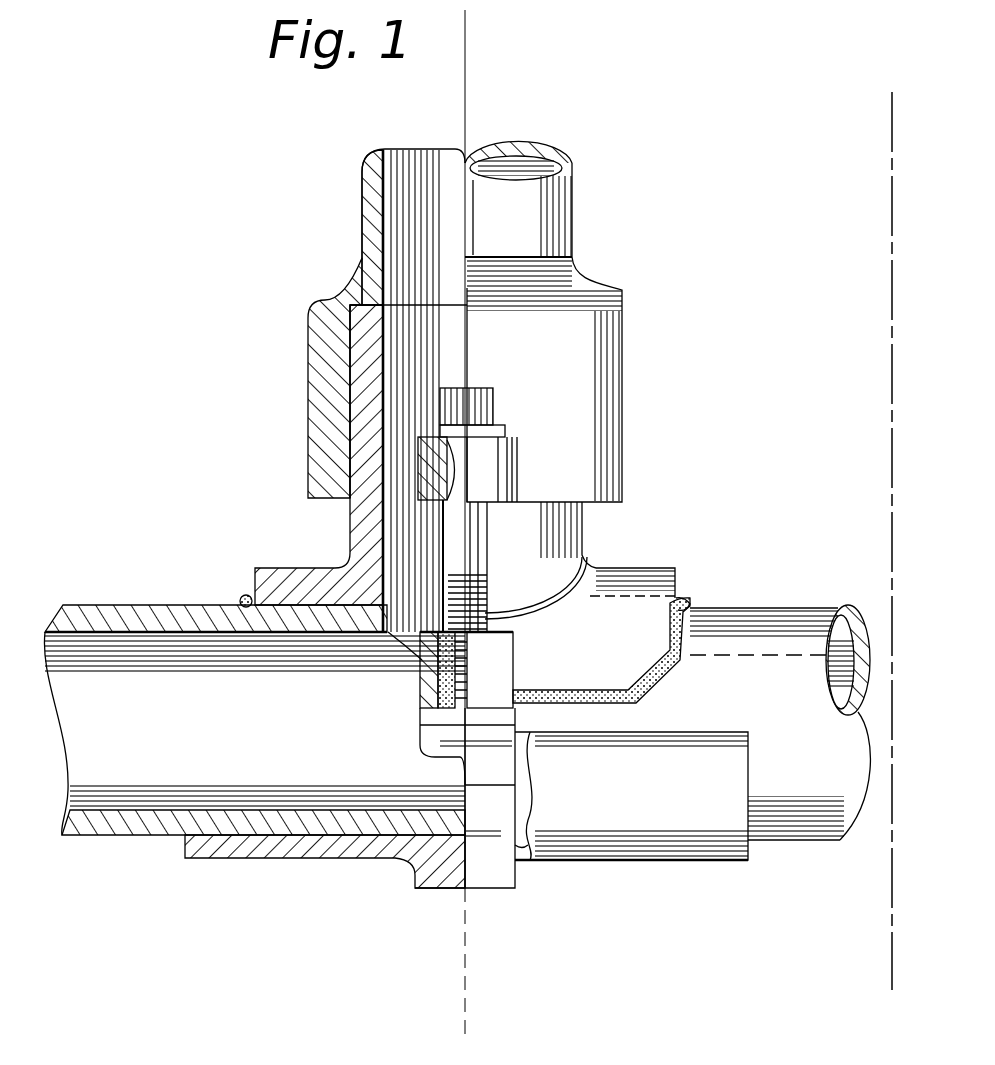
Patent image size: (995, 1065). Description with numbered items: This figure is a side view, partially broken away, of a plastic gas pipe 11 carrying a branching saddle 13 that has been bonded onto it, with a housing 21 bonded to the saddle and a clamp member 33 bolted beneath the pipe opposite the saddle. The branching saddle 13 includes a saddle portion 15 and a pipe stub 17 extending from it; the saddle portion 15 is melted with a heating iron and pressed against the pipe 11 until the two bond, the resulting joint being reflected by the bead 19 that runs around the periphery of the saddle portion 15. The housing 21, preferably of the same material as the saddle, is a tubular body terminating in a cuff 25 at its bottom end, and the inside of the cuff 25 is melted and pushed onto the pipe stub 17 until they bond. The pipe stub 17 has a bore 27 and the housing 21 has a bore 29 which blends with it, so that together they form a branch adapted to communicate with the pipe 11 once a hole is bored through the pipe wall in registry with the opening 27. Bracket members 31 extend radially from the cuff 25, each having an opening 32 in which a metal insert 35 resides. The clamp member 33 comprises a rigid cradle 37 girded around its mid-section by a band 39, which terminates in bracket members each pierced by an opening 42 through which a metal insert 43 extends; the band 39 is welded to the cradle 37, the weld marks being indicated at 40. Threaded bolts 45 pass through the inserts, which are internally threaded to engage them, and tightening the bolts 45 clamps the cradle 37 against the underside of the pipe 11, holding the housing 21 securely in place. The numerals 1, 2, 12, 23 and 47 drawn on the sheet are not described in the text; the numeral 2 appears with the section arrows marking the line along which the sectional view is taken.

The fitting assembly 1 is at (528, 657).
The section line 2- 2 is at (892, 92).
The plastic gas pipe 11 is at (755, 608).
The main pipe 12 is at (130, 580).
The branching saddle 13 is at (596, 527).
The saddle portion 15 is at (640, 568).
The pipe stub 17 is at (350, 516).
The bead 19 is at (246, 595).
The housing 21 is at (624, 286).
The inlet tube 23 is at (582, 218).
The cuff 25 is at (314, 437).
The bore 27 is at (385, 377).
The bore 29 is at (380, 218).
The bracket members 31 is at (418, 462).
The opening 32 is at (456, 482).
The clamp member 33 is at (424, 900).
The metal insert 35 is at (506, 430).
The rigid cradle 37 is at (630, 860).
The band 39 is at (496, 890).
The weld marks 40 is at (527, 845).
The opening 42 is at (430, 670).
The metal insert 43 is at (513, 707).
The threaded bolts 45 is at (496, 386).
The threaded screw 47 is at (488, 592).